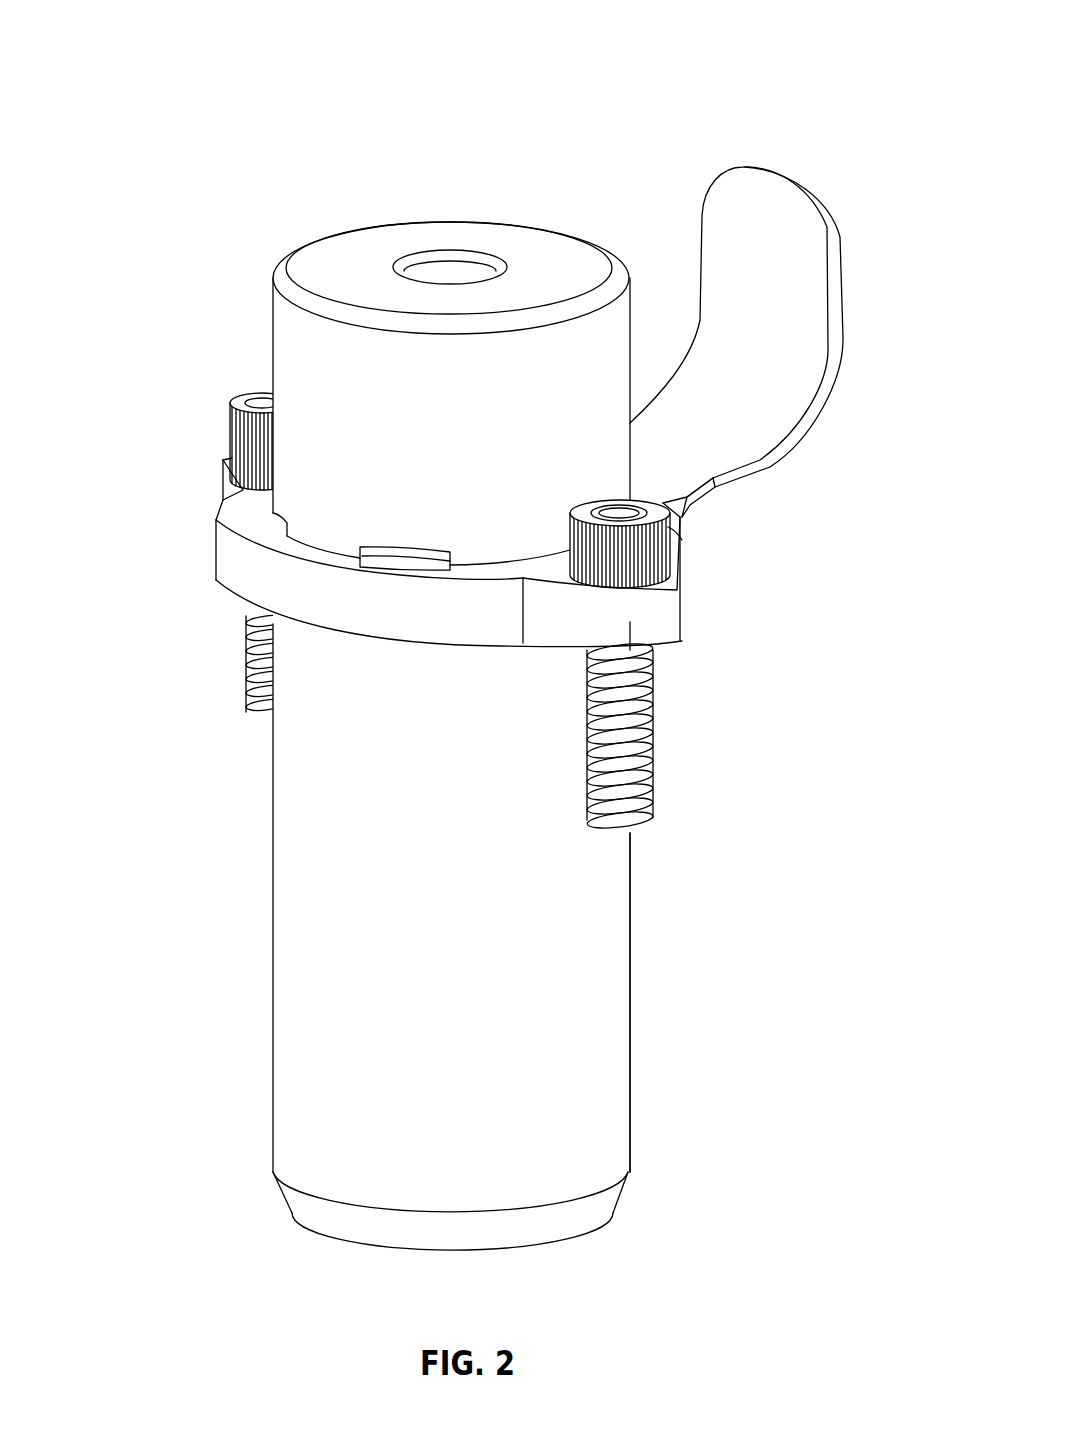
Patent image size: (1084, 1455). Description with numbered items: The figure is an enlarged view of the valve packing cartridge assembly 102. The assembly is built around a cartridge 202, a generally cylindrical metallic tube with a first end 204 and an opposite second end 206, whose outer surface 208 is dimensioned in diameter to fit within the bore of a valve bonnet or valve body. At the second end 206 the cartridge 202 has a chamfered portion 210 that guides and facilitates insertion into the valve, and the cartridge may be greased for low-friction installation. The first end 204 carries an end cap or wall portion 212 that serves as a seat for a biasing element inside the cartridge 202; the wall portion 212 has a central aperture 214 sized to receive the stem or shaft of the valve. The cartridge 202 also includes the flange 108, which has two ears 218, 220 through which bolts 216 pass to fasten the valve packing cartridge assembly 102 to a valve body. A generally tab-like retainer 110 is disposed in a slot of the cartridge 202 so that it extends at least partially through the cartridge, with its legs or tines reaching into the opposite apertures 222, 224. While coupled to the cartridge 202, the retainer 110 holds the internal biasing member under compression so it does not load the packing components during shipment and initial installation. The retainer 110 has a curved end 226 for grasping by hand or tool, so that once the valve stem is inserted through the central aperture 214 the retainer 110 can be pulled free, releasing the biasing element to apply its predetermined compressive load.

The valve packing cartridge assembly 102 is at (468, 106).
The flange 108 is at (217, 547).
The retainer 110 is at (773, 470).
The cartridge 202 is at (272, 903).
The first end 204 is at (310, 247).
The second end 206 is at (383, 1248).
The outer surface 208 is at (630, 957).
The chamfered portion 210 is at (617, 1200).
The wall portion 212 is at (557, 268).
The central aperture 214 is at (452, 252).
The bolts 216 is at (241, 395).
The ear 218 is at (224, 489).
The ear 220 is at (682, 612).
The aperture 222 is at (285, 538).
The aperture 224 is at (387, 572).
The curved end 226 is at (837, 247).